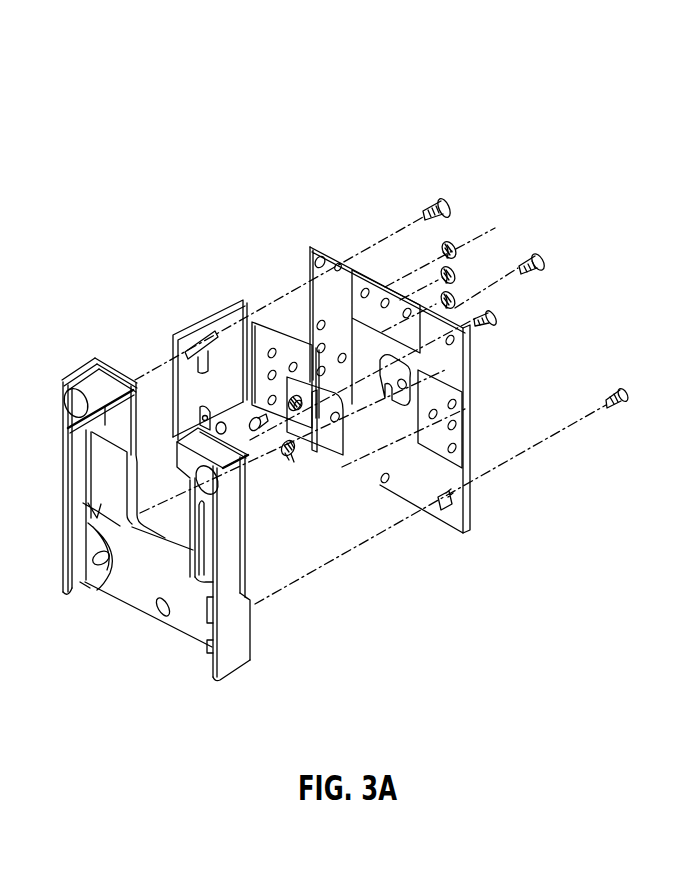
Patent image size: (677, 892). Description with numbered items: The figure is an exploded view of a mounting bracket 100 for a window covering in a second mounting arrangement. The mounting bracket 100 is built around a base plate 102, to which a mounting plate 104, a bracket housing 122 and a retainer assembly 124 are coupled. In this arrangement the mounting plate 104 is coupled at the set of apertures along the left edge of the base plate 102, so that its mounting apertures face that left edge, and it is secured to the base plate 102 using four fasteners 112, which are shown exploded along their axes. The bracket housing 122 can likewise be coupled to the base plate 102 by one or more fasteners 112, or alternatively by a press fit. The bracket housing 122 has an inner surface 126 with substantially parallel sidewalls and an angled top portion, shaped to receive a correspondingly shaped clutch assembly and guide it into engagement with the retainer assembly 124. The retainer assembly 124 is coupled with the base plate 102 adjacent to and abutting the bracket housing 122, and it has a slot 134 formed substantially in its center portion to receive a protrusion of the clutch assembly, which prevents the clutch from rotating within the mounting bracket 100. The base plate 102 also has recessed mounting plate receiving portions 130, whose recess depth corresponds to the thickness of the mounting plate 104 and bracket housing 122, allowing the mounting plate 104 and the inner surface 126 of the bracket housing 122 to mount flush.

The mounting bracket 100 is at (232, 140).
The base plate 102 is at (309, 242).
The mounting plate 104 is at (206, 311).
The fasteners 112 is at (512, 219).
The bracket housing 122 is at (155, 619).
The retainer assembly 124 is at (343, 464).
The inner surface 126 is at (77, 580).
The recessed mounting plate receiving portions 130 is at (312, 317).
The slot 134 is at (312, 420).